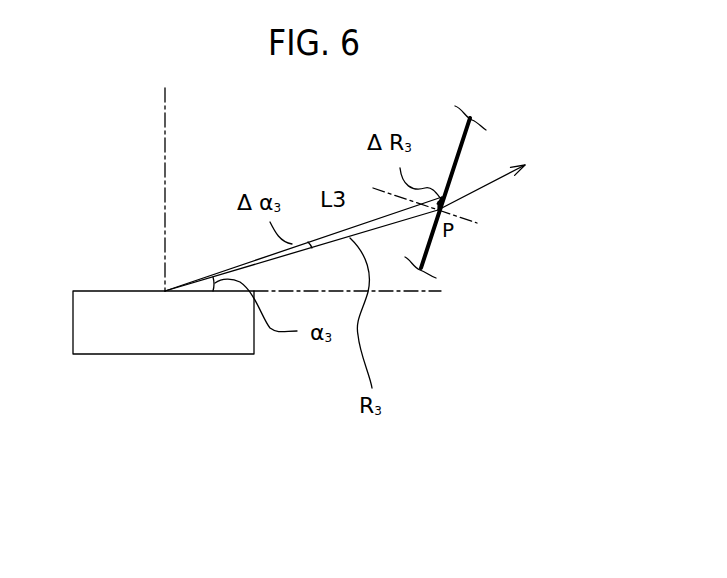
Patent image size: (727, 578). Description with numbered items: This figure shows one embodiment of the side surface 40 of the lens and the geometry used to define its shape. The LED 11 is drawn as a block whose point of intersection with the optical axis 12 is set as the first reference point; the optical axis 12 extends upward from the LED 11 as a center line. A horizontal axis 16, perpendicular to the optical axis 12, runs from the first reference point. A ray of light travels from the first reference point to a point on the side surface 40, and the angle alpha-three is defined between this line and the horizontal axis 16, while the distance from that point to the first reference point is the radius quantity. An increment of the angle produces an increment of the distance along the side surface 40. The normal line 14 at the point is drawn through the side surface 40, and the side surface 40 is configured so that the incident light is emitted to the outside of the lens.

The LED 11 is at (160, 355).
The optical axis 12 is at (165, 150).
The normal line 14 is at (470, 223).
The horizontal axis 16 is at (407, 291).
The side surface 40 is at (425, 258).